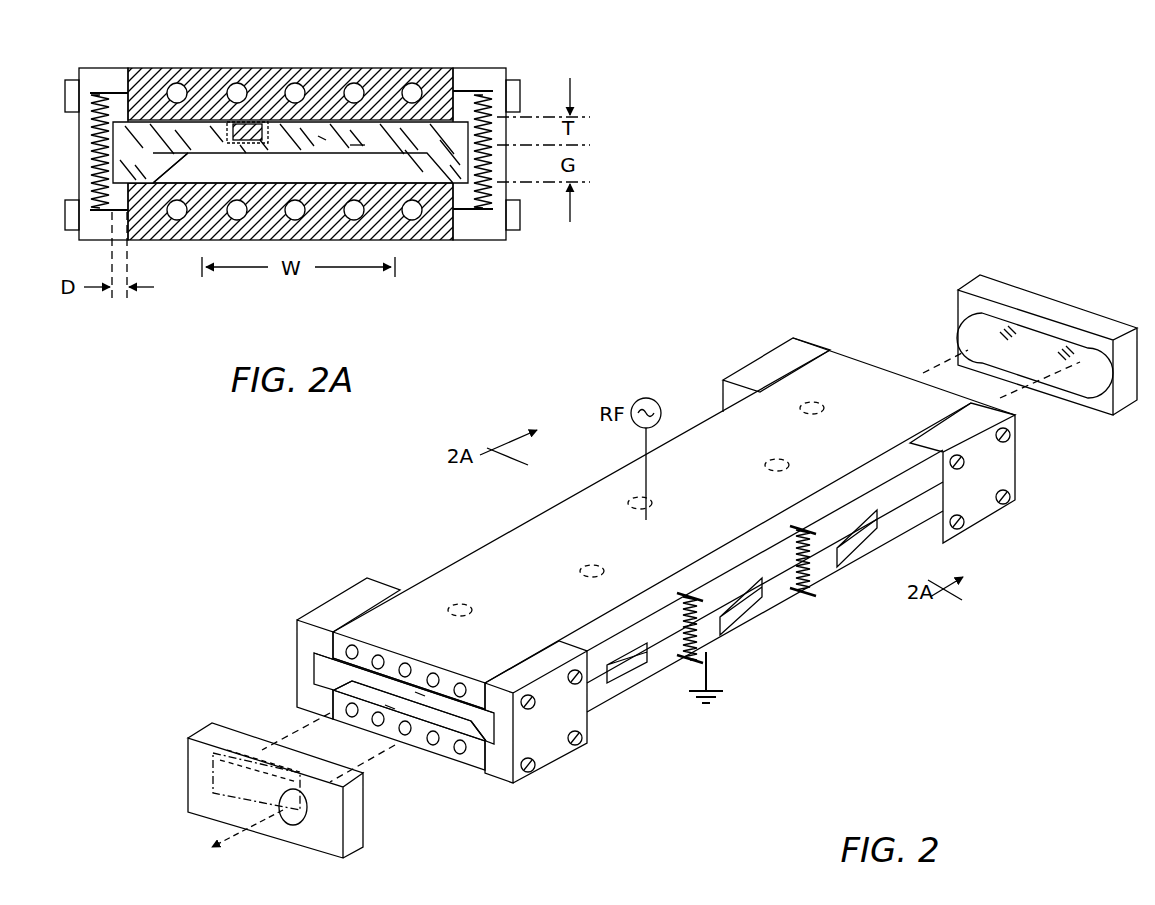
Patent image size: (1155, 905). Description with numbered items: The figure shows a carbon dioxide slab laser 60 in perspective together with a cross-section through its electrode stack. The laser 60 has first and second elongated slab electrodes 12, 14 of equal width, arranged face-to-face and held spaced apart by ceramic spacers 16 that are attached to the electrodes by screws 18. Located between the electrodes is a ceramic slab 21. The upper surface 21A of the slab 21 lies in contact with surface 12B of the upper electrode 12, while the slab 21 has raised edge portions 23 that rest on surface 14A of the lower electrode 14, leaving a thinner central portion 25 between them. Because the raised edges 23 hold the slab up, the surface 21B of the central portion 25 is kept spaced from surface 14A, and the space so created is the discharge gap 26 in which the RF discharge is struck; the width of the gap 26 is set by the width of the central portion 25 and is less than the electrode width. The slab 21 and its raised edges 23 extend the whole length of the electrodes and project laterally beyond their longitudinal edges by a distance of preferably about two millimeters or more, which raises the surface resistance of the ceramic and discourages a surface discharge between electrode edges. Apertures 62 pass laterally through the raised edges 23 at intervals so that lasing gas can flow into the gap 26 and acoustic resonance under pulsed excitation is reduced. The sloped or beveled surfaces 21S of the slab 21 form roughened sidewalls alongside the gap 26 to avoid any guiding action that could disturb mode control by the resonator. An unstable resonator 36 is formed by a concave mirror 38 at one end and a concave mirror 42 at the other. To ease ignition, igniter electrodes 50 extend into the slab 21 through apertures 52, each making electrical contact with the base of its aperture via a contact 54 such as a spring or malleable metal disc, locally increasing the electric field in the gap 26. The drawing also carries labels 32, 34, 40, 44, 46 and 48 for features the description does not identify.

In FIG. 2A, the upper slab electrode 12 is at (414, 62).
In FIG. 2, the upper slab electrode 12 is at (492, 540).
In FIG. 2, the surface of electrode 12 12B is at (397, 650).
In FIG. 2A, the lower slab electrode 14 is at (433, 228).
In FIG. 2, the lower slab electrode 14 is at (763, 622).
In FIG. 2A, the surface of electrode 14 14A is at (213, 213).
In FIG. 2, the surface of electrode 14 14A is at (415, 732).
In FIG. 2A, the ceramic spacers 16 is at (487, 237).
In FIG. 2, the ceramic spacers 16 is at (332, 600).
In FIG. 2, the screws 18 is at (583, 740).
In FIG. 2A, the ceramic slab 21 is at (143, 108).
In FIG. 2, the ceramic slab 21 is at (480, 727).
In FIG. 2, the surface of slab 21 21A is at (433, 695).
In FIG. 2A, the surface of slab 21 21B is at (357, 143).
In FIG. 2A, the sidewall surfaces 21S is at (173, 165).
In FIG. 2, the sidewall surfaces 21S is at (333, 670).
In FIG. 2A, the raised edge portions 23 is at (153, 155).
In FIG. 2, the raised edge portions 23 is at (347, 688).
In FIG. 2A, the thinner central portion 25 is at (324, 133).
In FIG. 2, the thinner central portion 25 is at (420, 690).
In FIG. 2, the discharge gap 26 is at (390, 707).
In FIG. 2A, the springs 32 is at (481, 90).
In FIG. 2, the springs 32 is at (810, 592).
In FIG. 2A, the cooling holes 34 is at (235, 82).
In FIG. 2, the cooling holes 34 is at (377, 655).
In FIG. 2, the unstable resonator 36 is at (963, 395).
In FIG. 2, the concave mirror 38 is at (975, 332).
In FIG. 2, the output mirror block 40 is at (998, 288).
In FIG. 2, the concave mirror 42 is at (222, 785).
In FIG. 2, the rear mirror block 44 is at (207, 732).
In FIG. 2, the beam path 46 is at (950, 358).
In FIG. 2, the output aperture 48 is at (310, 820).
In FIG. 2, the igniter electrodes 50 is at (793, 413).
In FIG. 2A, the apertures 52 is at (260, 127).
In FIG. 2A, the contact 54 is at (247, 132).
In FIG. 2A, the slab laser 60 is at (185, 312).
In FIG. 2, the slab laser 60 is at (905, 735).
In FIG. 2, the apertures 62 is at (623, 663).